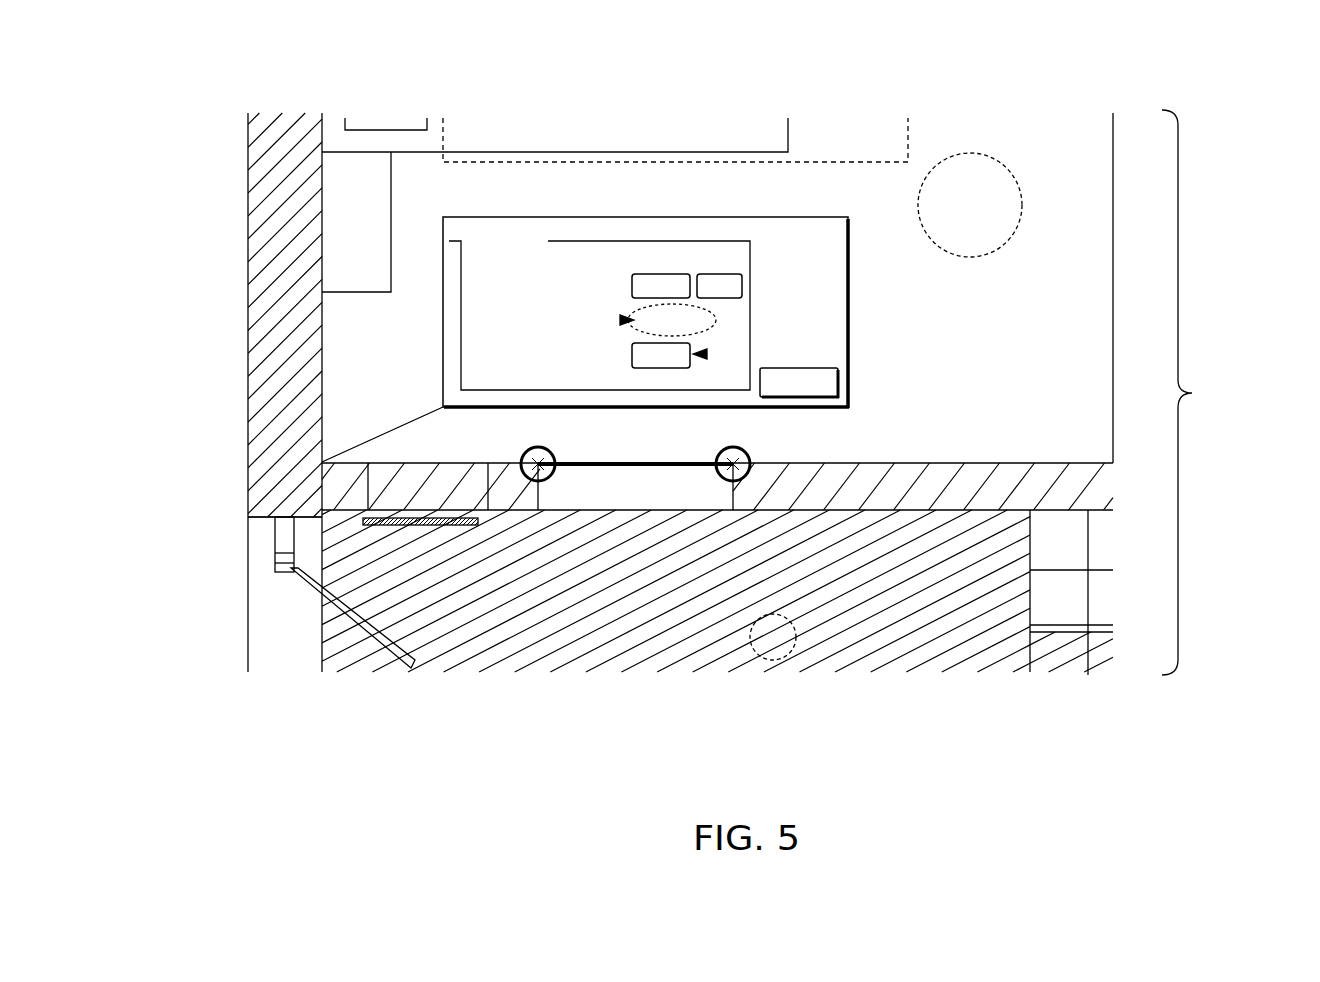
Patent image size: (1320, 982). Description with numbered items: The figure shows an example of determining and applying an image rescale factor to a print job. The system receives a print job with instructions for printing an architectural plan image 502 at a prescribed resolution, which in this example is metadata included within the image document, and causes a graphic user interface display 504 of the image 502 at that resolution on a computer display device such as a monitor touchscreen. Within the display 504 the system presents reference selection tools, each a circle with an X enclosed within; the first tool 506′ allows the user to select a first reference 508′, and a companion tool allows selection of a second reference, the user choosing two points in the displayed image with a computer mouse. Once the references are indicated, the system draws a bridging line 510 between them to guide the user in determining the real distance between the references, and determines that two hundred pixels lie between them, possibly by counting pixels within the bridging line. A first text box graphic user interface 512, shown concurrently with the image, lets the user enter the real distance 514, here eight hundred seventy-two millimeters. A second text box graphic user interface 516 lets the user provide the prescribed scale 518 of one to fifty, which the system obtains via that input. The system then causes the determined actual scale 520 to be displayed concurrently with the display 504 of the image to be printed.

The architectural plan image 502 is at (1195, 393).
The graphic user interface display 504 is at (248, 468).
The first reference selection tool 506′ is at (248, 516).
The first reference 508′ is at (538, 463).
The bridging line 510 is at (572, 467).
The first text box graphic user interface 512 is at (620, 284).
The real distance 514 is at (661, 258).
The second text box graphic user interface 516 is at (630, 368).
The prescribed scale 518 is at (708, 354).
The actual scale 520 is at (624, 320).